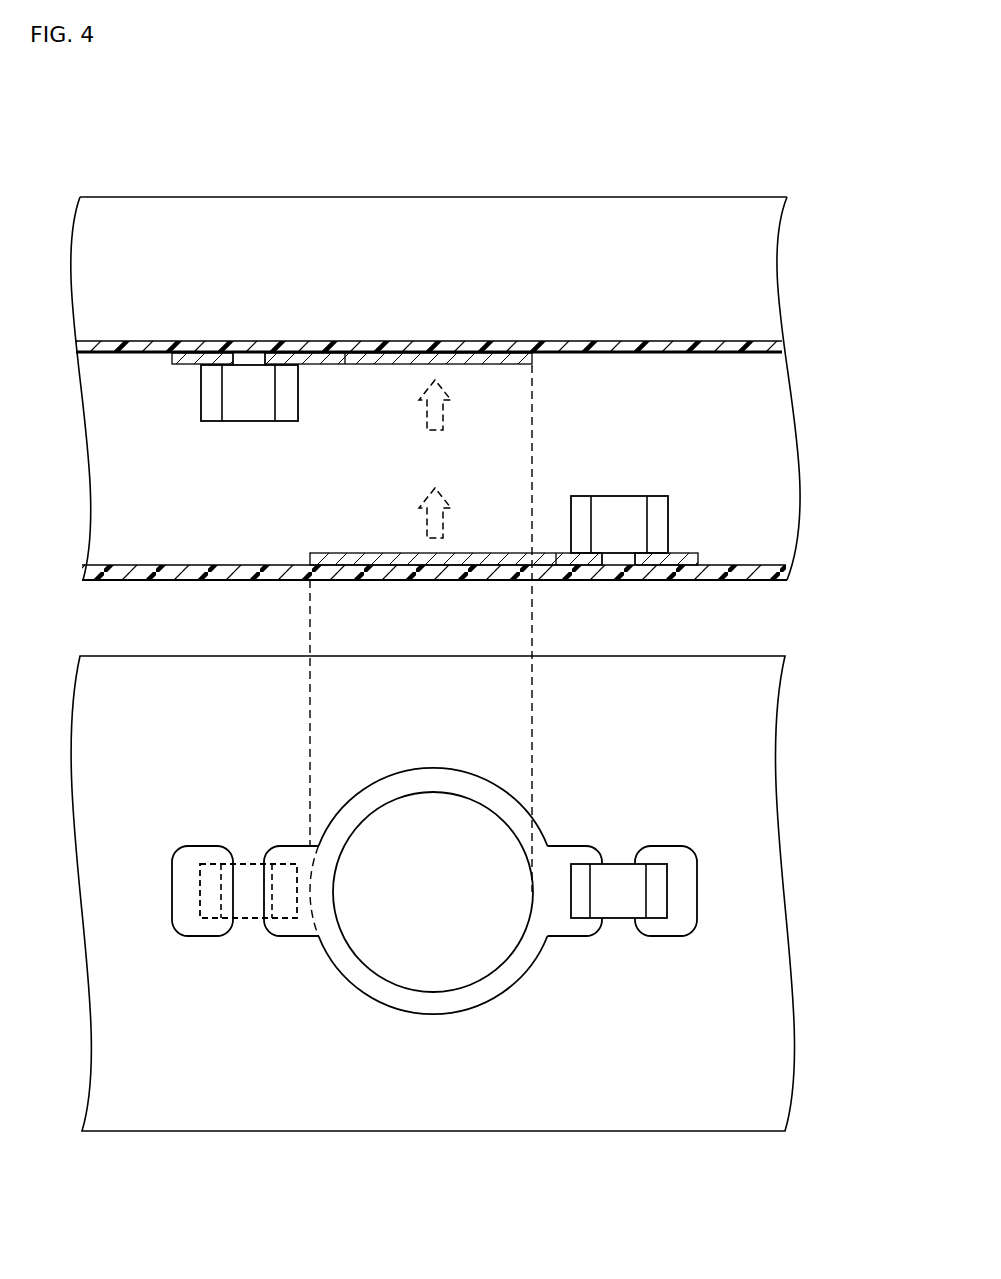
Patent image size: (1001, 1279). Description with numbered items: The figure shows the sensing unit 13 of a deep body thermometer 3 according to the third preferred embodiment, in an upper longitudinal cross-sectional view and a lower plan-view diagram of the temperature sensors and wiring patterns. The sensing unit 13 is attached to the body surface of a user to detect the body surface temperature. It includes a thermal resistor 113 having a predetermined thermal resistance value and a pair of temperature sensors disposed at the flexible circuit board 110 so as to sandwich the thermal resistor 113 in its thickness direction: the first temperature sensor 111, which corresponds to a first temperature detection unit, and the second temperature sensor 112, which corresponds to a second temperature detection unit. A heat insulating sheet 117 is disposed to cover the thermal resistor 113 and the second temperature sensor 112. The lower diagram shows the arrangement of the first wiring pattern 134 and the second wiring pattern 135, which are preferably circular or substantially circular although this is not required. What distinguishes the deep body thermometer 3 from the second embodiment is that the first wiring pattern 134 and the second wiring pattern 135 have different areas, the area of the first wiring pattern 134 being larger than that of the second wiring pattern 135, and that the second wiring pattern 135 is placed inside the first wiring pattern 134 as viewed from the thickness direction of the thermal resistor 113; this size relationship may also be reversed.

The deep body thermometer 3 is at (728, 156).
The sensing unit 13 is at (564, 186).
The heat insulating sheet 117 is at (641, 203).
The thermal resistor 113 is at (260, 553).
The flexible circuit board 110 is at (459, 340).
The first wiring pattern 134 is at (368, 552).
The second wiring pattern 135 is at (503, 366).
The first temperature sensor 111 is at (668, 518).
The second temperature sensor 112 is at (300, 396).